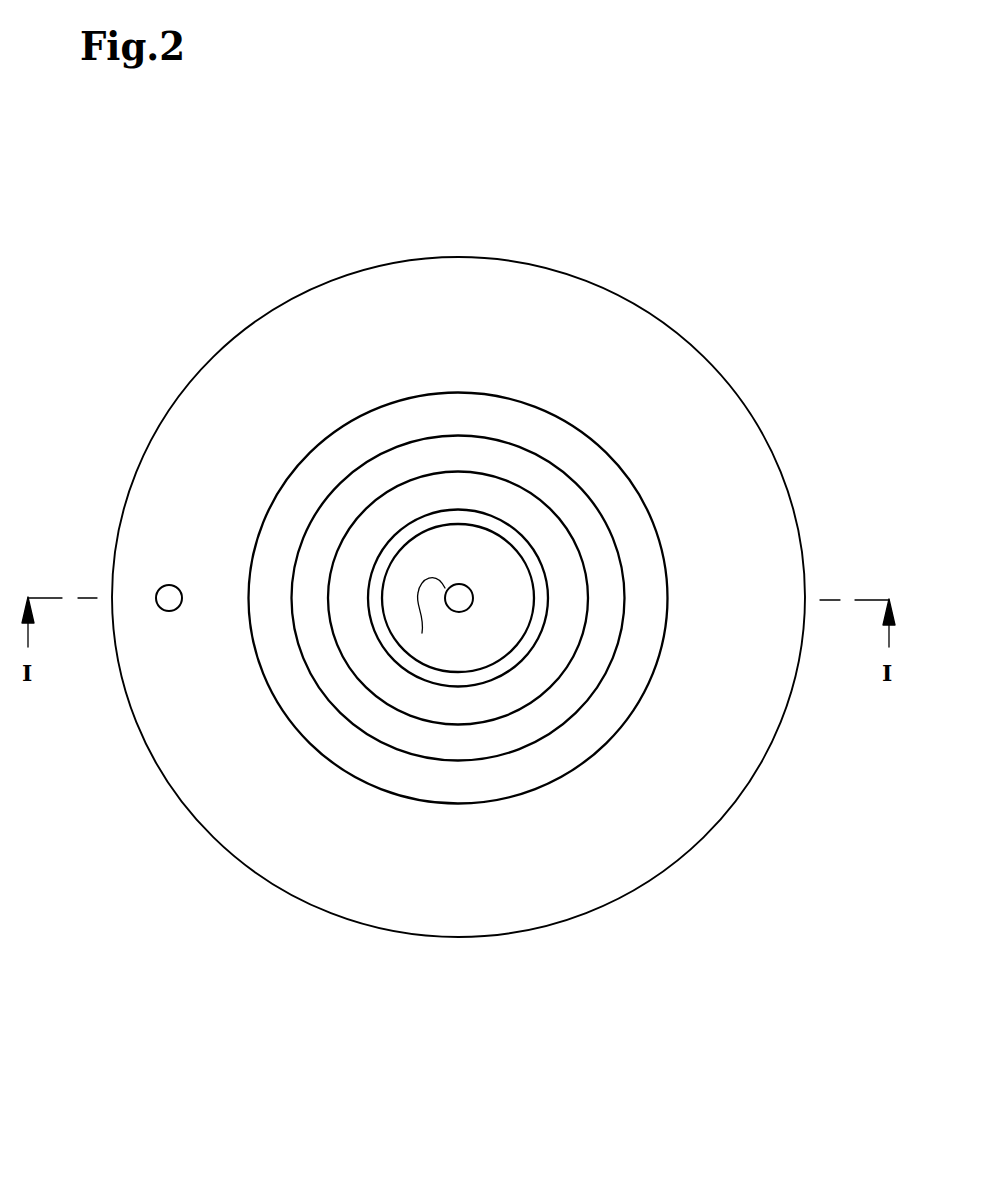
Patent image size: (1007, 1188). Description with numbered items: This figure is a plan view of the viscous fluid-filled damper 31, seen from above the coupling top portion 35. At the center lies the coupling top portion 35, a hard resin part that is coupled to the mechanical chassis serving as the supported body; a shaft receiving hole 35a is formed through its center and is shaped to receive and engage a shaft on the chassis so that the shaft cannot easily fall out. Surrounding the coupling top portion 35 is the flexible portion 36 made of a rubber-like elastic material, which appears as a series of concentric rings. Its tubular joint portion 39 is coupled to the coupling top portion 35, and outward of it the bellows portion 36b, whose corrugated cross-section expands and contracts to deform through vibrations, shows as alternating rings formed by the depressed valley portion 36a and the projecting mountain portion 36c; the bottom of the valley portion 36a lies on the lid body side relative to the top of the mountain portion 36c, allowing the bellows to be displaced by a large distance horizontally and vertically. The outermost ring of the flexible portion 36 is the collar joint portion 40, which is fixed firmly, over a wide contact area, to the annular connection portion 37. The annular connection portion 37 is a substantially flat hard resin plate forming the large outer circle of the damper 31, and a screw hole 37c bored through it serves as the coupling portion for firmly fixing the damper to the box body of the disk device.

The viscous fluid-filled damper 31 is at (652, 285).
The coupling top portion 35 is at (503, 623).
The shaft receiving hole 35a is at (422, 633).
The flexible portion 36 is at (482, 451).
The valley portion 36a is at (480, 495).
The bellows portion 36b is at (478, 148).
The mountain portion 36c is at (447, 457).
The annular connection portion 37 is at (617, 898).
The screw hole 37c is at (170, 585).
The tubular joint portion 39 is at (542, 548).
The collar joint portion 40 is at (368, 437).